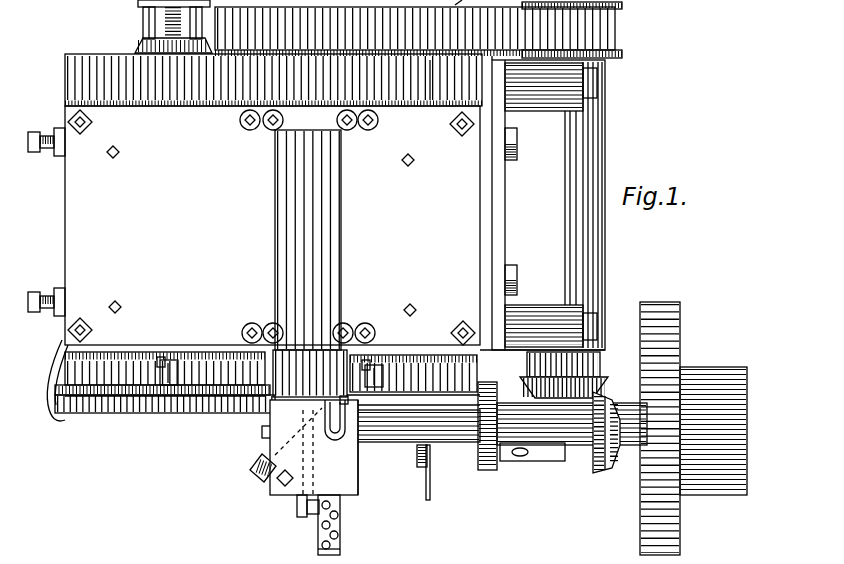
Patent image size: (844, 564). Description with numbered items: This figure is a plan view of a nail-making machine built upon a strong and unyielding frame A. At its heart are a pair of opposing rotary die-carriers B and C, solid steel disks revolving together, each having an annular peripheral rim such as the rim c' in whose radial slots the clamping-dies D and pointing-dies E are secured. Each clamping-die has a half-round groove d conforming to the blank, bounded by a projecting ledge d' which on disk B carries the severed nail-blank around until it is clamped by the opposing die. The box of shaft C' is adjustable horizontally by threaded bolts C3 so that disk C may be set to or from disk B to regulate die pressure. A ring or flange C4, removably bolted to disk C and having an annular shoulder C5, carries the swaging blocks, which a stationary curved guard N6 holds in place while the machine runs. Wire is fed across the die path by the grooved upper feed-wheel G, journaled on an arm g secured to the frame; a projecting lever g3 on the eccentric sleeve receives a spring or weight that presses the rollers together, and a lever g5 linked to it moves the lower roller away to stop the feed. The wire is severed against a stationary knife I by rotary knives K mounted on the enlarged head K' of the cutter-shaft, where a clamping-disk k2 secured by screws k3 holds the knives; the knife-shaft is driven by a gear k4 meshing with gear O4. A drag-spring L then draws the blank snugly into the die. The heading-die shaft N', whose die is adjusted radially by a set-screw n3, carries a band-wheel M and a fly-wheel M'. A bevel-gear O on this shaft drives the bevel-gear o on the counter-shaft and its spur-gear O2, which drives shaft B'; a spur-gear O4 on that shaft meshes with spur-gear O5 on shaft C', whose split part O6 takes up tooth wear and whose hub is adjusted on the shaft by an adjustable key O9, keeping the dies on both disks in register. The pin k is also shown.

The frame A is at (272, 225).
The rotary die-carrier B is at (522, 203).
The rotary die-carrier C is at (218, 362).
The threaded bolts C3 is at (38, 152).
The ring or projecting flange C4 is at (62, 380).
The annular shoulder or offset C5 is at (58, 392).
The annular peripheral rim c' is at (165, 421).
The clamping-dies D is at (168, 362).
The pointing-dies E is at (172, 378).
The half-round groove d is at (266, 405).
The projecting ledge d' is at (289, 375).
The upper feed-wheel G is at (333, 420).
The stationary knife I is at (255, 472).
The rotary cutter or knife K is at (291, 527).
The head of cutter-shaft K' is at (310, 373).
The drag-spring L is at (353, 428).
The band-wheel M is at (713, 431).
The fly-wheel M' is at (660, 428).
The heading-die shaft N' is at (534, 473).
The stationary curved guard N6 is at (148, 413).
The bevel-gear O is at (600, 466).
The spur-gear O2 is at (615, 30).
The spur-gear O4 is at (448, 88).
The spur-gear O5 is at (95, 60).
The split gear part O6 is at (204, 88).
The adjustable key O9 is at (143, 13).
The frame or arm g is at (405, 430).
The projecting arm or lever g3 is at (420, 480).
The lever g5 is at (430, 487).
The pin k is at (346, 398).
The clamping-disk k2 is at (314, 447).
The screws or threaded bolts k3 is at (317, 527).
The gear k4 is at (321, 88).
The set-screw n3 is at (262, 432).
The bevel-gear o is at (598, 380).